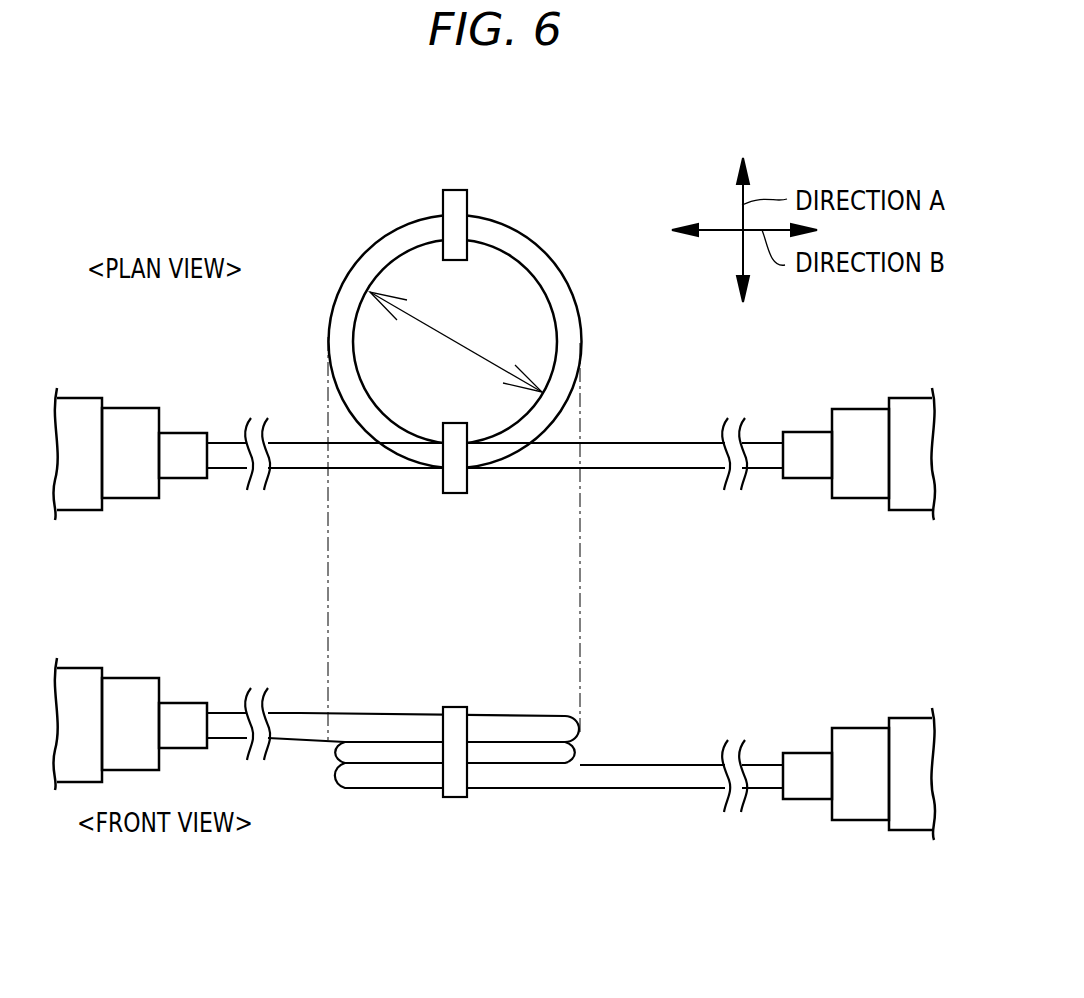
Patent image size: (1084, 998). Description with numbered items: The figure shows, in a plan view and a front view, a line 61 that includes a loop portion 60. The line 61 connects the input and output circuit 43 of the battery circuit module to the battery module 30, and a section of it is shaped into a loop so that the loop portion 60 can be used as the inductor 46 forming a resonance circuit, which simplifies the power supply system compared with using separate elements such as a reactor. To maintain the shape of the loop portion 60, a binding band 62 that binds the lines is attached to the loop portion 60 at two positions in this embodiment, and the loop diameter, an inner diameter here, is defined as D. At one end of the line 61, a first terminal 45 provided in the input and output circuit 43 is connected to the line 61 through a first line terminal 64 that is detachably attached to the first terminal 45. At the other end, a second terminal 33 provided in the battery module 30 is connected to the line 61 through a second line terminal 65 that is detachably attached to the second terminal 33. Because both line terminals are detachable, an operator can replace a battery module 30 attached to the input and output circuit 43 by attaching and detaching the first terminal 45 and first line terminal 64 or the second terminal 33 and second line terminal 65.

The battery module 30 is at (910, 735).
The second terminal 33 is at (858, 745).
The input and output circuit 43 is at (83, 495).
The first terminal 45 is at (130, 490).
The inductor 46 is at (455, 493).
The loop portion 60 is at (413, 491).
The line 61 is at (660, 455).
The binding band 62 is at (467, 710).
The first line terminal 64 is at (183, 468).
The second line terminal 65 is at (807, 768).
The loop diameter D is at (447, 338).